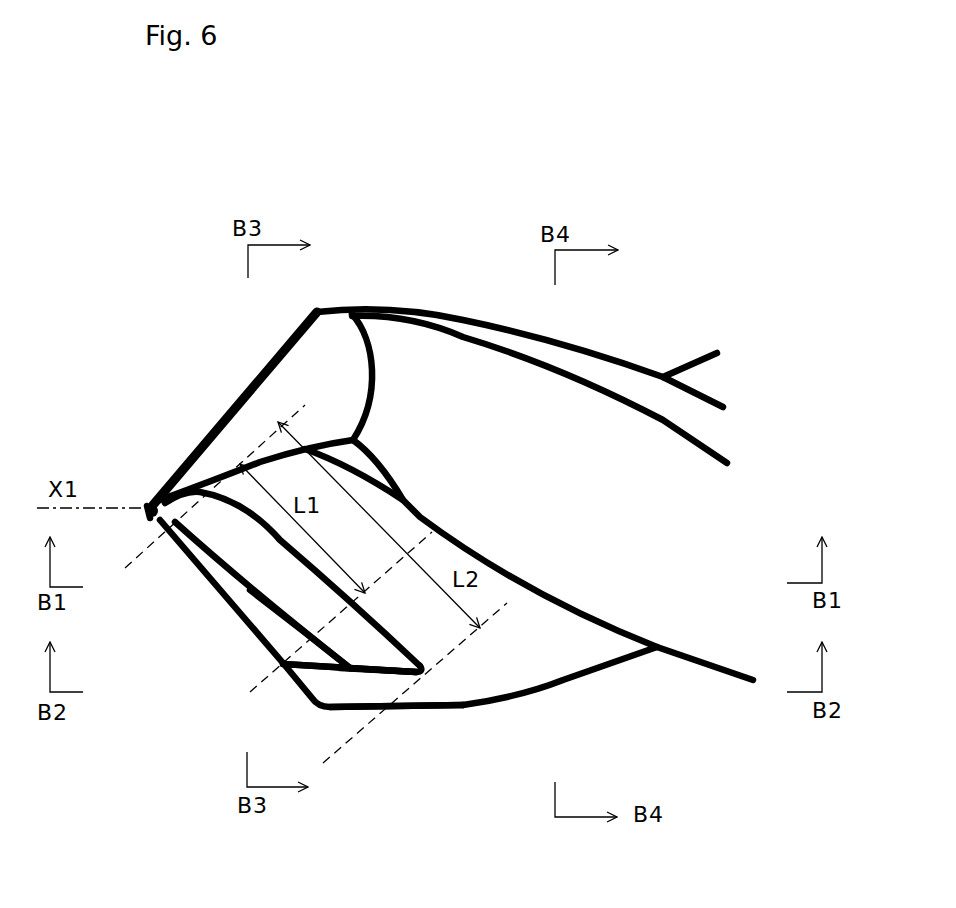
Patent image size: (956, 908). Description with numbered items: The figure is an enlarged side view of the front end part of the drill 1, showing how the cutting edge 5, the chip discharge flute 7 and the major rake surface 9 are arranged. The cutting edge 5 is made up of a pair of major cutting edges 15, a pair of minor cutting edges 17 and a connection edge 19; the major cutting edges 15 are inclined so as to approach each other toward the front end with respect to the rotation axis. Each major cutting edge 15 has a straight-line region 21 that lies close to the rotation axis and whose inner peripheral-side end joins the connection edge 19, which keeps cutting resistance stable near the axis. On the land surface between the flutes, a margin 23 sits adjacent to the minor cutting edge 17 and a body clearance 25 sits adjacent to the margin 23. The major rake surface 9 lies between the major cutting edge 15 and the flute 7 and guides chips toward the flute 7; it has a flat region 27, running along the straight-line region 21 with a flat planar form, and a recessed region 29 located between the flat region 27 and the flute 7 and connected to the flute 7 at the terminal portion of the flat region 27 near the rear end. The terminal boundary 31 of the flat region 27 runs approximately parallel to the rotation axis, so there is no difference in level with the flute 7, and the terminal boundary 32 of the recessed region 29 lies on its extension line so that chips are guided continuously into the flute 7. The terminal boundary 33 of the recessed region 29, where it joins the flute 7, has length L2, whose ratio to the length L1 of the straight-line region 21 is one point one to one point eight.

The drill 1 is at (396, 216).
The cutting edge 5 is at (405, 513).
The chip discharge flute 7 is at (540, 660).
The major rake surface 9 is at (402, 762).
The major cutting edge 15 is at (312, 301).
The minor cutting edge 17 is at (628, 358).
The connection edge 19 is at (152, 493).
The straight-line region 21 is at (277, 668).
The margin 23 is at (592, 367).
The body clearance 25 is at (428, 400).
The flat region 27 is at (300, 628).
The recessed region 29 is at (402, 690).
The terminal boundary 31 is at (330, 618).
The terminal boundary 32 is at (405, 662).
The terminal boundary 33 is at (400, 634).